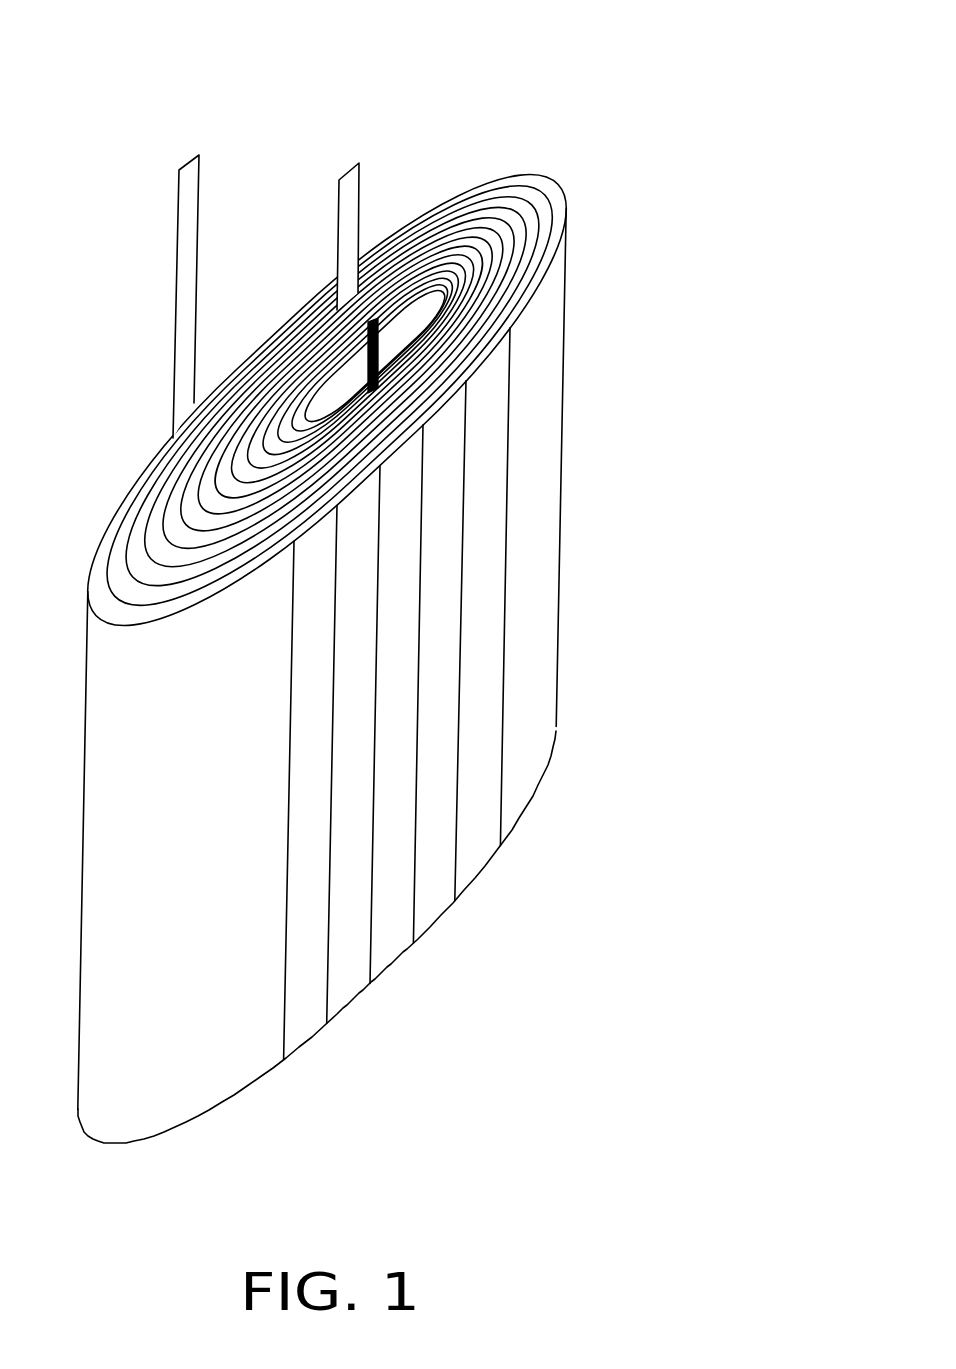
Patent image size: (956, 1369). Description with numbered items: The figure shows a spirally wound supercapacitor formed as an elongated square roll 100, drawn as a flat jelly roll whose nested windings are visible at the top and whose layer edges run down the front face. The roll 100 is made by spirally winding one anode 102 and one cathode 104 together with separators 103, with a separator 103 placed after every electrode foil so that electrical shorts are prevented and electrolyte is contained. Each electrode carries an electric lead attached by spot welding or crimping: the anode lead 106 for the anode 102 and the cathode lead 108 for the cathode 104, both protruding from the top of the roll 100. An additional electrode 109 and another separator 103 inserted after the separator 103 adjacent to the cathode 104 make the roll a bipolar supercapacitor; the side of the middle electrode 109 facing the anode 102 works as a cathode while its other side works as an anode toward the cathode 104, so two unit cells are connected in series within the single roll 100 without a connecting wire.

The elongated square roll 100 is at (685, 32).
The anode 102 is at (221, 1055).
The separator 103 is at (488, 841).
The cathode 104 is at (447, 902).
The anode lead 106 is at (165, 232).
The cathode lead 108 is at (372, 176).
The bipolar electrode 109 is at (351, 998).